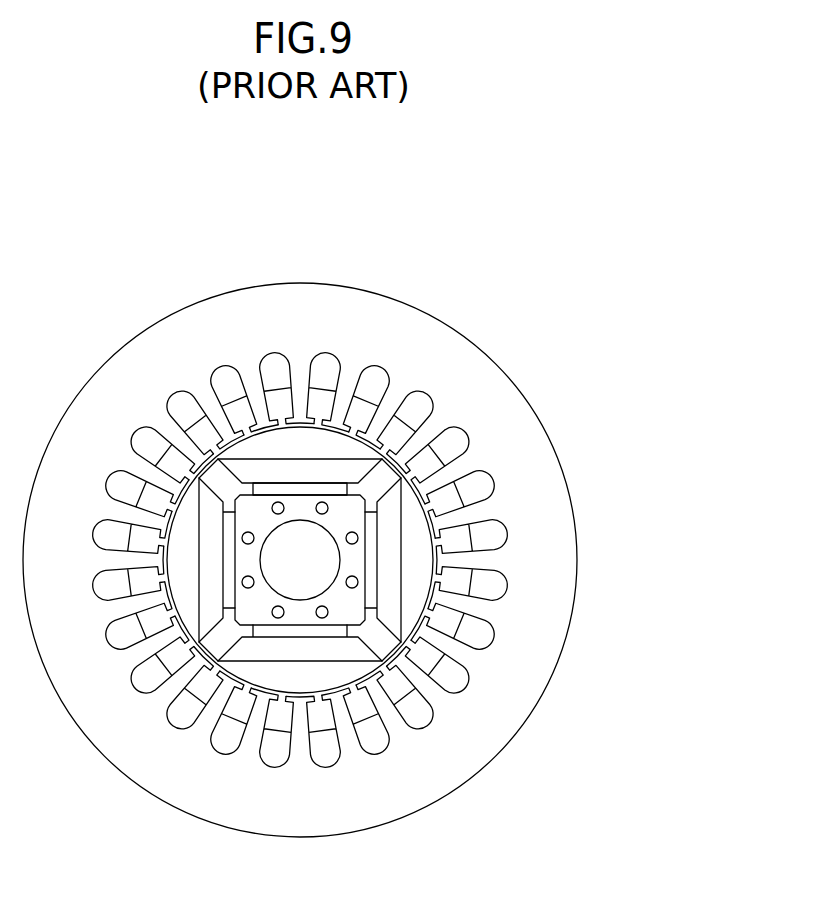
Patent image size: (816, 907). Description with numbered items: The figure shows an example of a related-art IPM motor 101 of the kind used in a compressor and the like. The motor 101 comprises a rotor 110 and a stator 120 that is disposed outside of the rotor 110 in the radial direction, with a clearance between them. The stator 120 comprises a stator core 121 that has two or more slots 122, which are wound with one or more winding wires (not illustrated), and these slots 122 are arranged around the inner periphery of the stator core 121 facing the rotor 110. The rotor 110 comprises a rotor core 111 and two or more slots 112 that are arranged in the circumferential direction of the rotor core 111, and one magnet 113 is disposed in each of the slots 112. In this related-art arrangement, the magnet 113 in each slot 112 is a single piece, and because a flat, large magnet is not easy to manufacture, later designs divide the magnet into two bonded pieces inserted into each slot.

The motor 101 is at (525, 320).
The rotor 110 is at (418, 574).
The rotor core 111 is at (404, 608).
The slot 112 is at (333, 487).
The magnet 113 is at (288, 490).
The stator 120 is at (451, 774).
The stator core 121 is at (263, 805).
The slot 122 is at (180, 708).